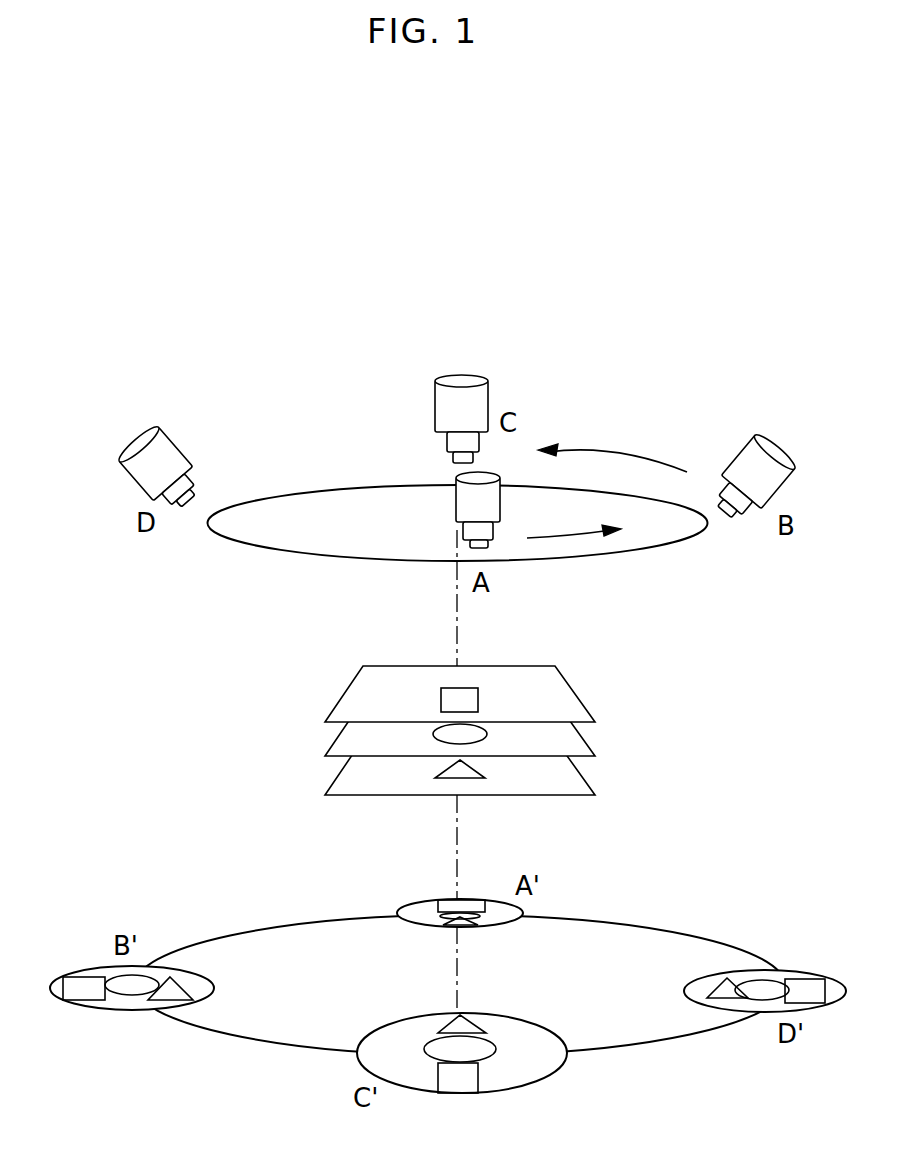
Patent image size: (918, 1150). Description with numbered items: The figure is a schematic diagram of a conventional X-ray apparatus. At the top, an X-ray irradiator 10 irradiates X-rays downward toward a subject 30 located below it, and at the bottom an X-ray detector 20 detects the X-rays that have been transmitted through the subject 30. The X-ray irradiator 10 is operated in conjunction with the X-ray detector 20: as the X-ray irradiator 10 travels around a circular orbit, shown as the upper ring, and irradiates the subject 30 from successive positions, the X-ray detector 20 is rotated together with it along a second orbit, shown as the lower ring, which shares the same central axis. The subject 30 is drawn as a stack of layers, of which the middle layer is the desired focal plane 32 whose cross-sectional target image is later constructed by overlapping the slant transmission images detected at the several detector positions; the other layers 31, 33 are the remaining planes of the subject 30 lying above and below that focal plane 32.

The X-ray irradiator 10 is at (458, 504).
The X-ray detector 20 is at (420, 903).
The subject 30 is at (333, 731).
The first layer with square pattern 31 is at (342, 695).
The focal plane 32 is at (336, 740).
The third layer with triangle pattern 33 is at (334, 782).